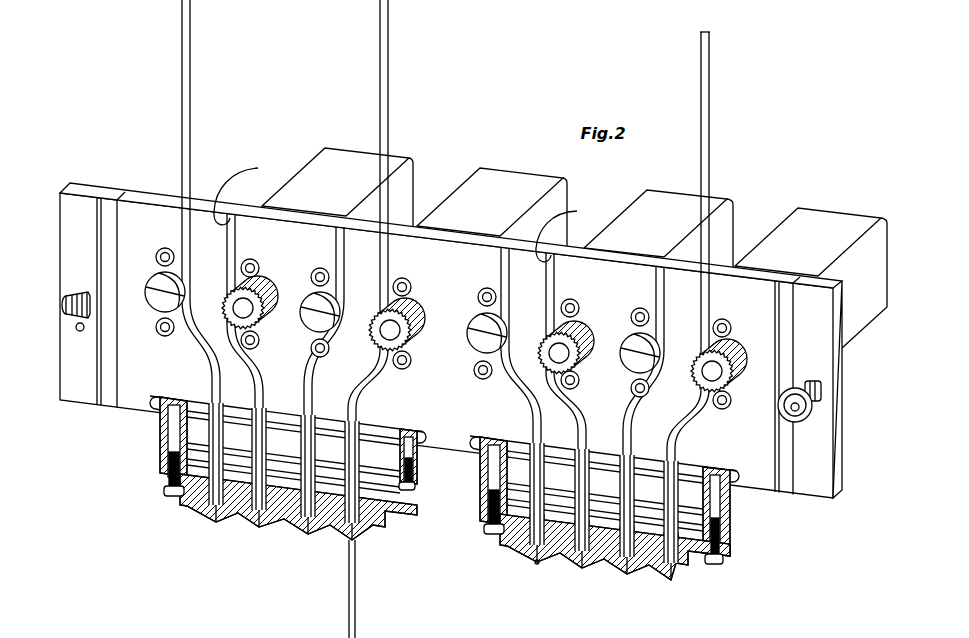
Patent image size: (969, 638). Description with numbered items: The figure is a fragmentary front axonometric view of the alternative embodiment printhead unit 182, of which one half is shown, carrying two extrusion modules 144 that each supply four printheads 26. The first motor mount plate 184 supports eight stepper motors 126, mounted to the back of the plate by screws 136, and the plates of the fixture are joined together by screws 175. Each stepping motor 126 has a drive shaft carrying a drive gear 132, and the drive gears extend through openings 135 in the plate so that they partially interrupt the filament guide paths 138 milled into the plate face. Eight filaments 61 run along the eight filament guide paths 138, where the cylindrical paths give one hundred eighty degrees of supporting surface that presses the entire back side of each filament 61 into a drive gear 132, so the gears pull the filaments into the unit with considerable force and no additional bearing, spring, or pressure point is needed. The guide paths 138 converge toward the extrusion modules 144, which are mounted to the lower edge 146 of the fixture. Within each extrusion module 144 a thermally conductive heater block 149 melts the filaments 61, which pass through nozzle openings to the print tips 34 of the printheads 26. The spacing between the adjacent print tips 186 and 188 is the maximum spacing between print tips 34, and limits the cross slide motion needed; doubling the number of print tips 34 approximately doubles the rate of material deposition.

The printhead 26 is at (686, 568).
The tip 34 is at (218, 524).
The filament 61 is at (190, 30).
The stepping motor 126 is at (320, 193).
The drive gear 132 is at (262, 296).
The opening 135 is at (150, 310).
The screw 136 is at (405, 280).
The filament guide path 138 is at (413, 211).
The extrusion module 144 is at (160, 454).
The lower edge 146 is at (822, 497).
The heater block 149 is at (203, 513).
The screw 175 is at (67, 314).
The printhead unit 182 is at (568, 58).
The first motor mount plate 184 is at (840, 397).
The print tip 186 is at (354, 541).
The print tip 188 is at (537, 564).